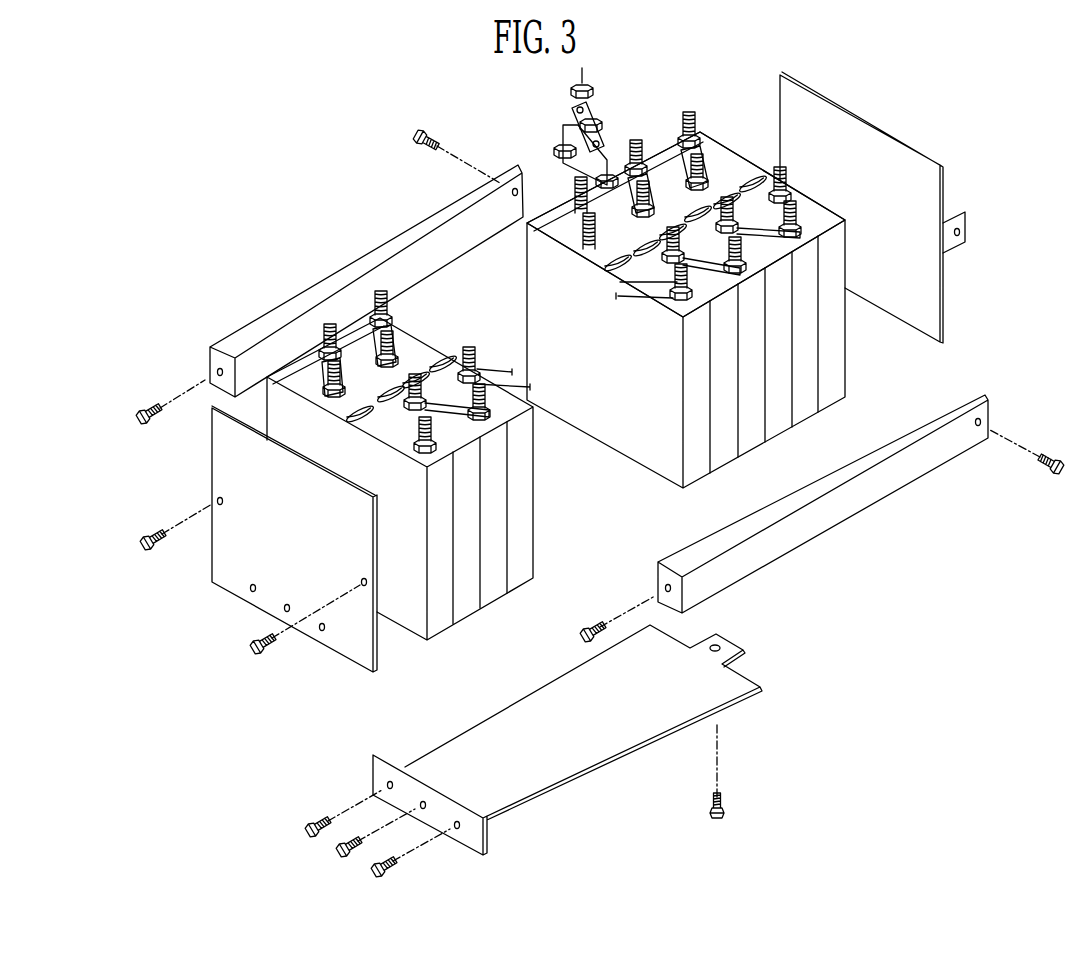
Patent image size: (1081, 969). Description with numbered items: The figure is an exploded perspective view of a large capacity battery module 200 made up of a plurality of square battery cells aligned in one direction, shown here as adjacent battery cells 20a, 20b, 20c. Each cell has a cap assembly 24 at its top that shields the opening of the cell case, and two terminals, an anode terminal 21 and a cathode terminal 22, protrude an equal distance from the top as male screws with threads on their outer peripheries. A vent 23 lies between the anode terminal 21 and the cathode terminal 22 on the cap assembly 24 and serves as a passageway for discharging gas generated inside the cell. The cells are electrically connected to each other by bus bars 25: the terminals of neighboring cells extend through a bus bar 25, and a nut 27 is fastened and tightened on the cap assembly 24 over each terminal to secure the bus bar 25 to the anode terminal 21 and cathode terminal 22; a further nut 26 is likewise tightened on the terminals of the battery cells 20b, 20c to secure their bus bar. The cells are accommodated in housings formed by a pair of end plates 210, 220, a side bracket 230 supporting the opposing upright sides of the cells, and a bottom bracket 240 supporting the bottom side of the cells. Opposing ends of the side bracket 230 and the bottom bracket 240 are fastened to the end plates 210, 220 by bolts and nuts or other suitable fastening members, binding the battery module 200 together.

The battery module 200 is at (210, 198).
The battery cell 20a is at (438, 623).
The battery cell 20b is at (467, 602).
The battery cell 20c is at (495, 585).
The anode terminal 21 is at (687, 113).
The cathode terminal 22 is at (780, 168).
The vent 23 is at (750, 176).
The cap assembly 24 is at (717, 158).
The bus bar 25 is at (323, 367).
The nut 26 is at (372, 312).
The nut 27 is at (318, 397).
The end plate 210 is at (363, 640).
The end plate 220 is at (948, 281).
The side bracket 230 is at (207, 359).
The bottom bracket 240 is at (392, 757).